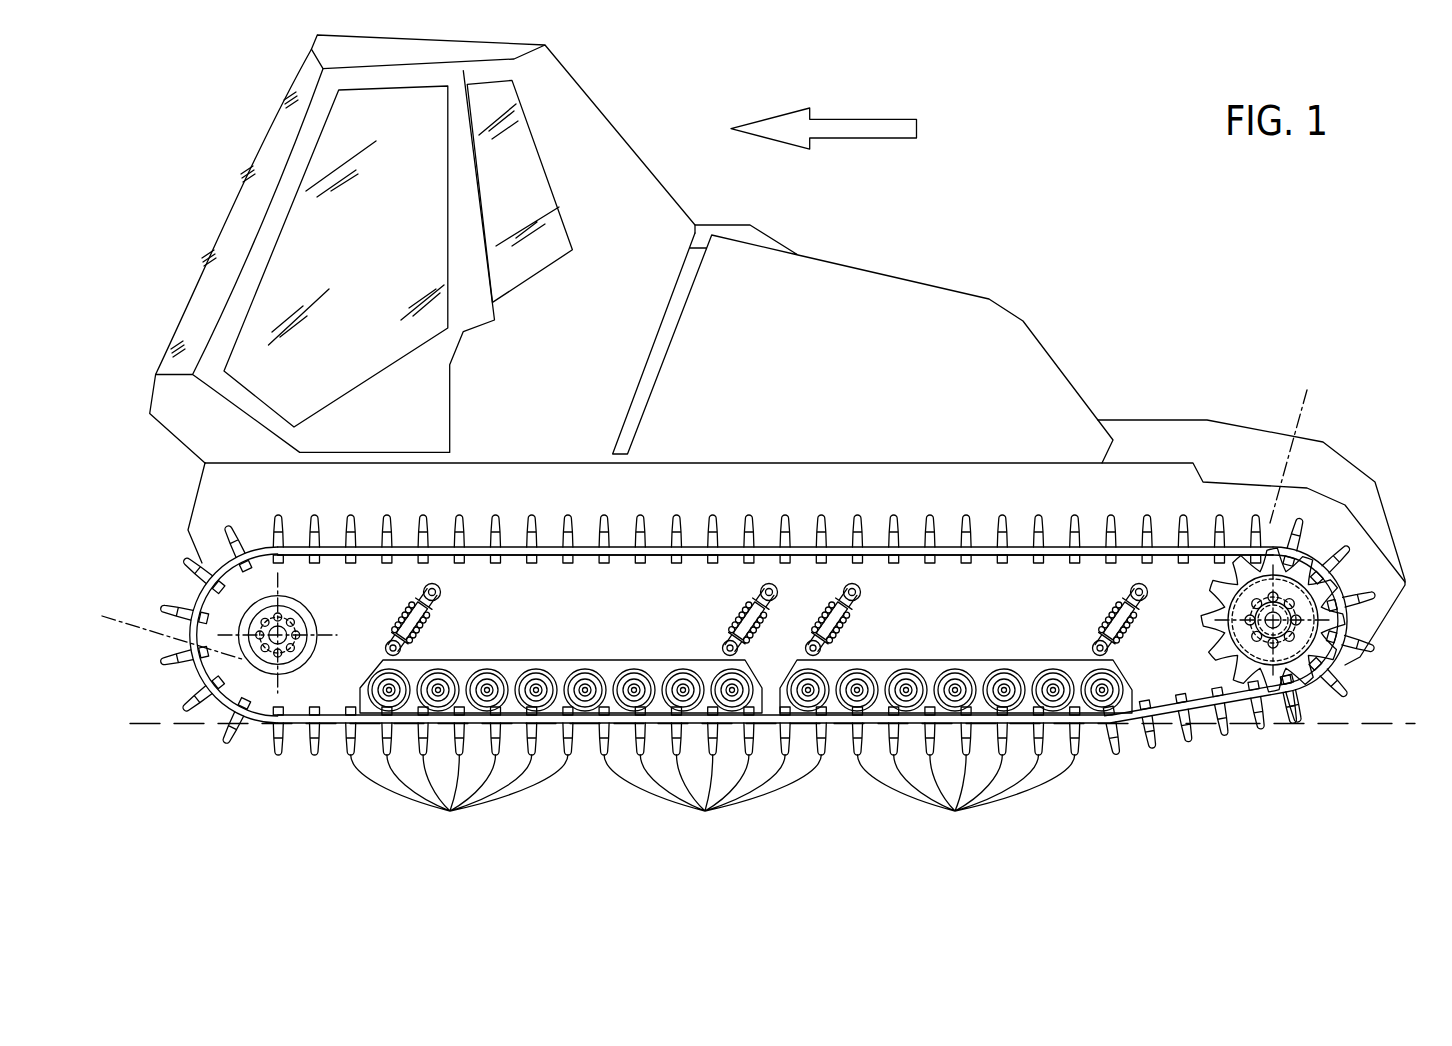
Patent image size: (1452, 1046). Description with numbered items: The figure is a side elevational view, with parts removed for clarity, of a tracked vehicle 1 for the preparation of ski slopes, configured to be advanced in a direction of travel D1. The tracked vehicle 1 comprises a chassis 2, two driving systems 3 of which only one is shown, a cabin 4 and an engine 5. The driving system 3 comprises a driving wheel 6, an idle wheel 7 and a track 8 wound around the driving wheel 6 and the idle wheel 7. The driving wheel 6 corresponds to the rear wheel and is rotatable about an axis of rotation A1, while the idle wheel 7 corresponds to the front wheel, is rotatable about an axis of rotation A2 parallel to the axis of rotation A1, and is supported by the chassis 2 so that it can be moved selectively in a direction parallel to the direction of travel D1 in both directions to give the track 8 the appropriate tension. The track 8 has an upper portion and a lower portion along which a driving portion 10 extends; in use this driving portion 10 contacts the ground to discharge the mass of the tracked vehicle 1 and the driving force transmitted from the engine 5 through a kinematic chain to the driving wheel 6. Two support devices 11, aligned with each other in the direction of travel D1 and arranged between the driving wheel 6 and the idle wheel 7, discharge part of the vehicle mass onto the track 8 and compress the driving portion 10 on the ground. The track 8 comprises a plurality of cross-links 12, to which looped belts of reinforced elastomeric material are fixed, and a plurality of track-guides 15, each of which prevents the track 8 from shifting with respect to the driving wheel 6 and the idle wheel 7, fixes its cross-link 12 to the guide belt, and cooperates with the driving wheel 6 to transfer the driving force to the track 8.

The tracked vehicle 1 is at (978, 144).
The chassis 2 is at (1150, 493).
The driving system 3 is at (138, 782).
The cabin 4 is at (608, 114).
The engine 5 is at (969, 278).
The driving wheel 6 is at (1340, 658).
The idle wheel 7 is at (190, 680).
The track 8 is at (337, 752).
The driving portion 10 is at (637, 803).
The support device 11 is at (518, 623).
The cross-link 12 is at (275, 753).
The track-guide 15 is at (601, 569).
The axis of rotation A1 is at (1297, 441).
The axis of rotation A2 is at (157, 631).
The direction of travel D1 is at (877, 117).